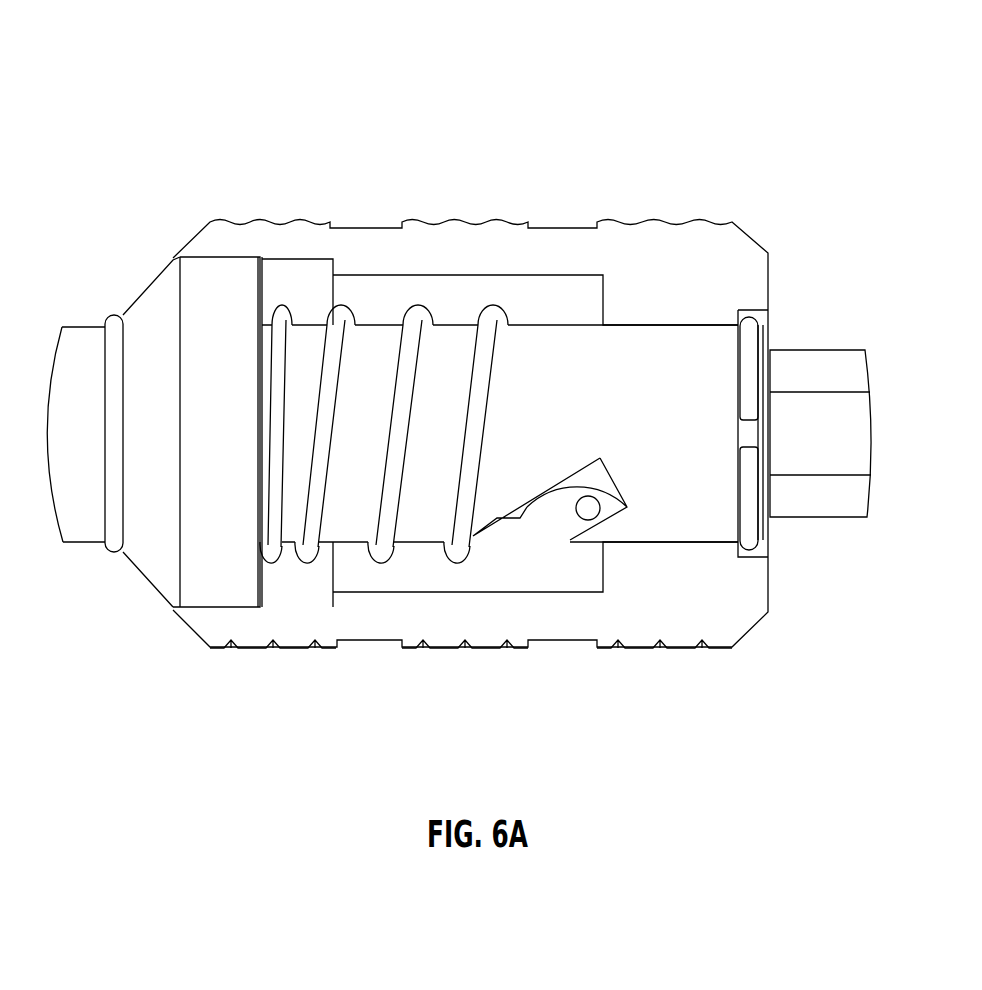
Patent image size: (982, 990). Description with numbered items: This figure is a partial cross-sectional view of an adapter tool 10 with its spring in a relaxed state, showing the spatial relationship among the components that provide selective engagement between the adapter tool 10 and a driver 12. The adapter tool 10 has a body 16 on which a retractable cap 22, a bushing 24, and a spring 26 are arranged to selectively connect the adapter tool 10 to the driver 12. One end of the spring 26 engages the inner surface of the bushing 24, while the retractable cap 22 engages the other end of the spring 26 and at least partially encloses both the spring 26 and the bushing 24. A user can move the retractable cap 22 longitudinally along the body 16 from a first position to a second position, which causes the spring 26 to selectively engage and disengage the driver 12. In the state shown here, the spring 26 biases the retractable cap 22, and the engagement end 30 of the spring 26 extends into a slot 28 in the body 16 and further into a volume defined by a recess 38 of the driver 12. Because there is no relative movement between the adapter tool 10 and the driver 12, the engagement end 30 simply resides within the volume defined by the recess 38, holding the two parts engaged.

The adapter tool 10 is at (147, 150).
The driver 12 is at (823, 360).
The body 16 is at (373, 332).
The retractable cap 22 is at (647, 248).
The bushing 24 is at (222, 287).
The spring 26 is at (418, 303).
The slot 28 is at (552, 510).
The engagement end 30 is at (588, 508).
The recess 38 is at (603, 493).